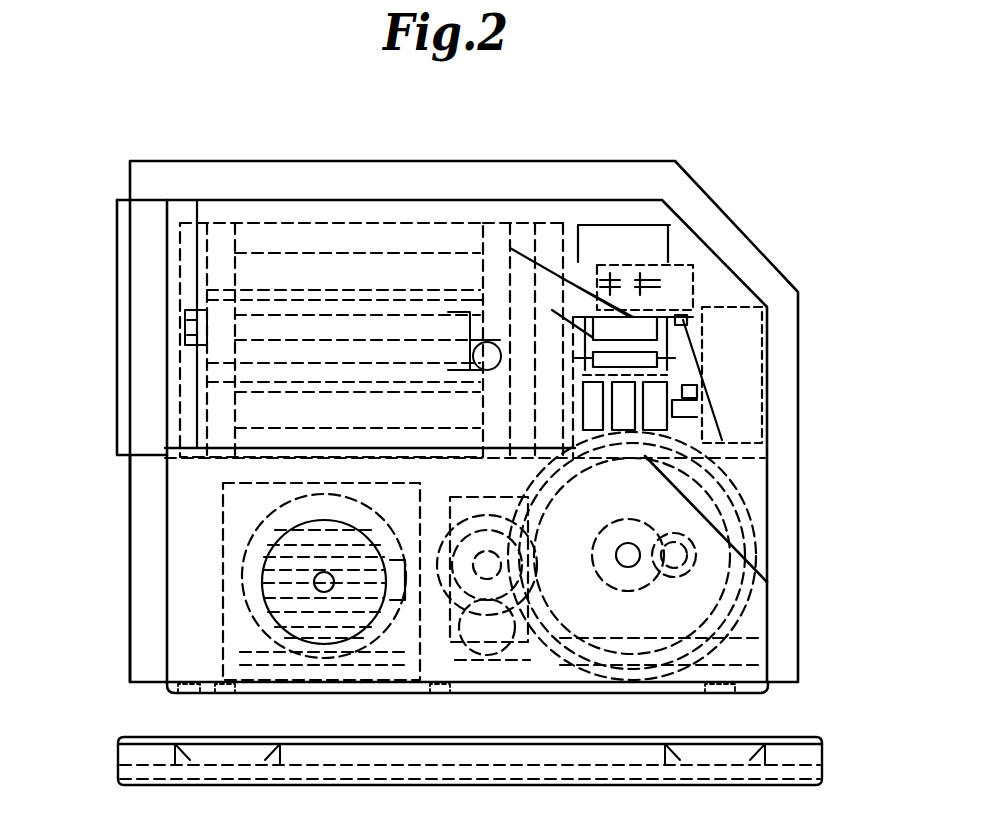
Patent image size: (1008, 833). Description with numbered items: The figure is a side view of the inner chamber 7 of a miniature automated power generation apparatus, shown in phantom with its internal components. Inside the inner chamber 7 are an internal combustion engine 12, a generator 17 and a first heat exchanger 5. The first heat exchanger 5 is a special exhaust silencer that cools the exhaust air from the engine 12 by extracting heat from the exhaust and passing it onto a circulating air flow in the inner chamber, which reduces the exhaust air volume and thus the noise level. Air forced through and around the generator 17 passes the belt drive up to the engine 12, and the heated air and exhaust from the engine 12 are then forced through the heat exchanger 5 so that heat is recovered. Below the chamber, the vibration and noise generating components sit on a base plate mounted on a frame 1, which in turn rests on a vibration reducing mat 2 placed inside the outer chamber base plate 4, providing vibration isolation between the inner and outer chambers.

The frame 1 is at (523, 718).
The vibration reducing mat 2 is at (523, 718).
The outer chamber base plate 4 is at (776, 732).
The first heat exchanger 5 is at (458, 246).
The inner chamber 7 is at (745, 258).
The internal combustion engine 12 is at (702, 508).
The generator 17 is at (234, 553).